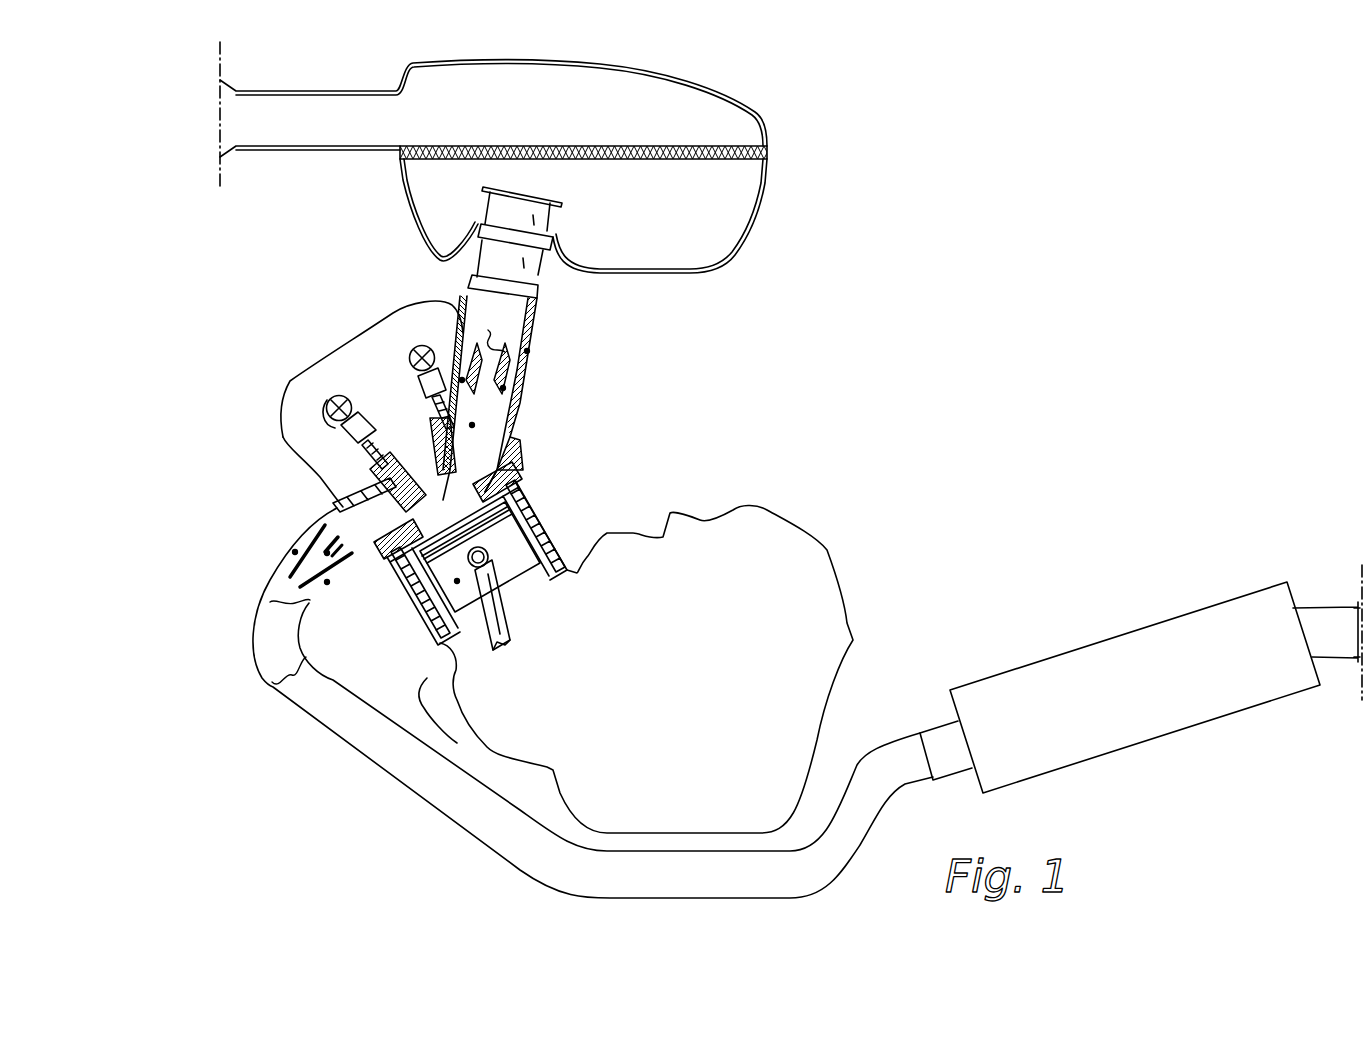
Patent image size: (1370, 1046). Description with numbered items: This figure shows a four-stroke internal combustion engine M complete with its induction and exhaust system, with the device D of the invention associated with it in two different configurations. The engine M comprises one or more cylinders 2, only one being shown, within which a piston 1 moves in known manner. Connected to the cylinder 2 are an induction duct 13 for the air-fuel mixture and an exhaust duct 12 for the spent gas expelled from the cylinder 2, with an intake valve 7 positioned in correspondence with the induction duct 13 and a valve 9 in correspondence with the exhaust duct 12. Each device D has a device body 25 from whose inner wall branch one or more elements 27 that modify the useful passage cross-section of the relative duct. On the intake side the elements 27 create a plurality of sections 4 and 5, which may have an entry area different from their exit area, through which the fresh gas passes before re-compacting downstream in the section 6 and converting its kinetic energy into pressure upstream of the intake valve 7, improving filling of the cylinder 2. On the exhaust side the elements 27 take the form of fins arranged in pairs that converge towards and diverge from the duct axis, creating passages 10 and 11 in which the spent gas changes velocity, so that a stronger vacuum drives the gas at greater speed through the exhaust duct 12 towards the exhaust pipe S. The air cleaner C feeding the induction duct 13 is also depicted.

The piston 1 is at (457, 581).
The cylinder 2 is at (403, 590).
The section 4 is at (503, 360).
The section 5 is at (503, 388).
The section 6 is at (472, 425).
The intake valve 7 is at (480, 487).
The valve 9 is at (417, 513).
The passage 10 is at (295, 552).
The passage 11 is at (327, 582).
The exhaust duct 12 is at (250, 635).
The induction duct 13 is at (536, 309).
The device body 25 is at (527, 351).
The elements 27 is at (520, 357).
The air cleaner C is at (697, 84).
The device D is at (200, 610).
The internal combustion engine M is at (430, 717).
The exhaust pipe S is at (1133, 627).